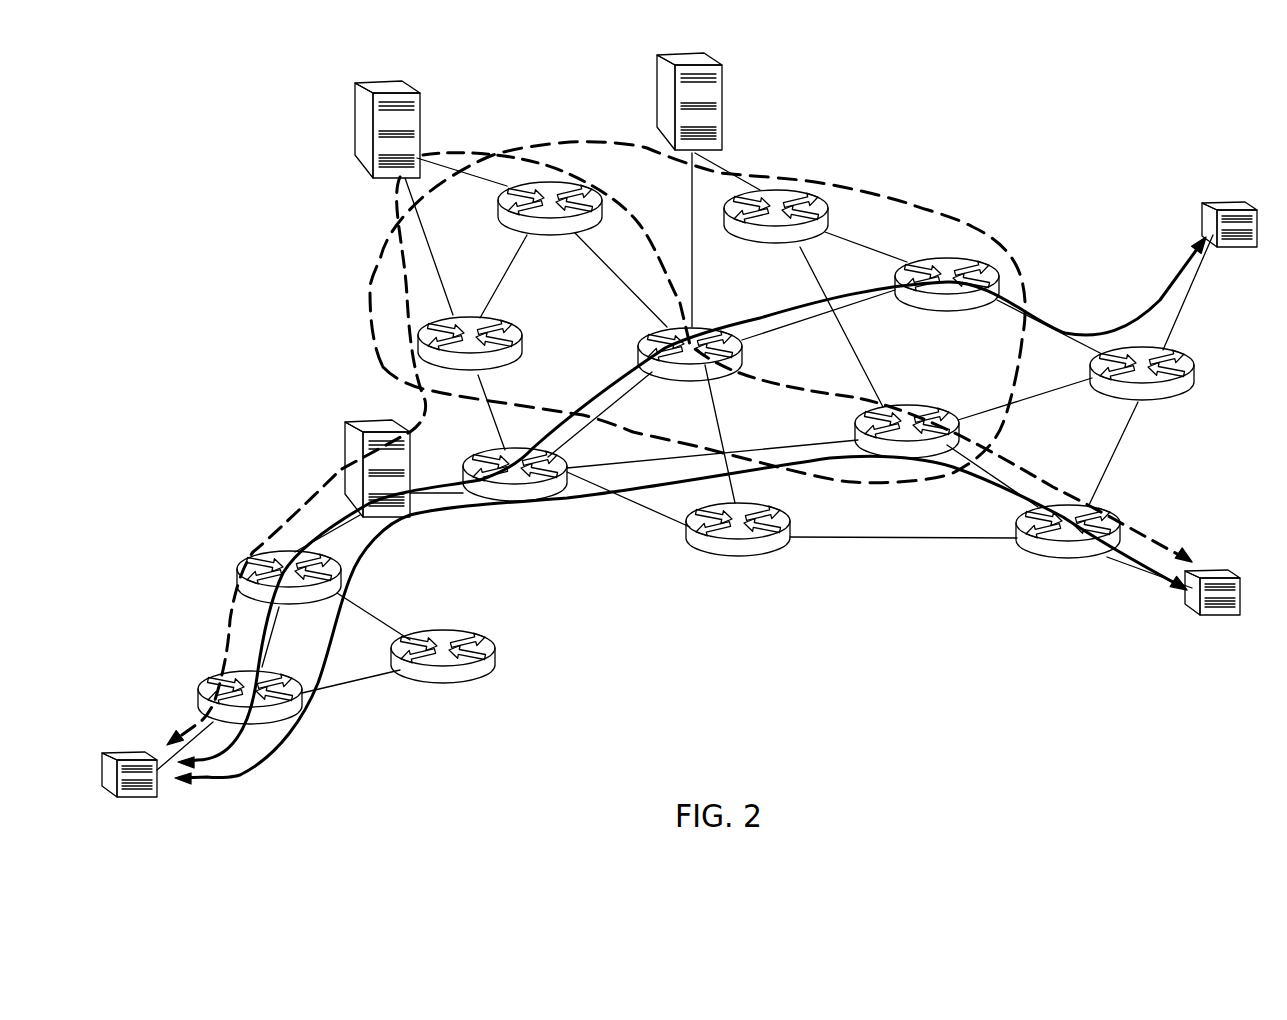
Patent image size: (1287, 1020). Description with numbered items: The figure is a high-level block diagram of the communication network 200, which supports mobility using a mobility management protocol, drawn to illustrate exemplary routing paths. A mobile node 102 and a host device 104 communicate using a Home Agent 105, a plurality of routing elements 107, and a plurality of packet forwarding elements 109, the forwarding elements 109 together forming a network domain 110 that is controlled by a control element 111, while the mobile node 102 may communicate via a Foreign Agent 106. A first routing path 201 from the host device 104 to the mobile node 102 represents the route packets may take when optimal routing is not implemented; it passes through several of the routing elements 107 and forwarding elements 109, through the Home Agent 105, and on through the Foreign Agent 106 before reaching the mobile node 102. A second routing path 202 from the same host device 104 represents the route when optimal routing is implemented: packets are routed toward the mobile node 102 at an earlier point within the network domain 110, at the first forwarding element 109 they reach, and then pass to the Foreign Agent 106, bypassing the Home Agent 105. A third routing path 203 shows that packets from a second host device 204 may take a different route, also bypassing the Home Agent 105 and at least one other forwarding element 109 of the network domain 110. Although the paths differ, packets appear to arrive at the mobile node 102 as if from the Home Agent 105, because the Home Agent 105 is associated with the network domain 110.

The communication network 200 is at (1085, 101).
The network domain 110 is at (915, 196).
The first routing path 201 is at (393, 198).
The second routing path 202 is at (652, 490).
The third routing path 203 is at (1068, 320).
The packet forwarding elements 109 is at (592, 198).
The routing elements 107 is at (303, 705).
The Home Agent 105 is at (360, 125).
The control element 111 is at (720, 91).
The Foreign Agent 106 is at (352, 442).
The second host device 204 is at (1225, 205).
The host device 104 is at (1210, 618).
The mobile node 102 is at (108, 756).